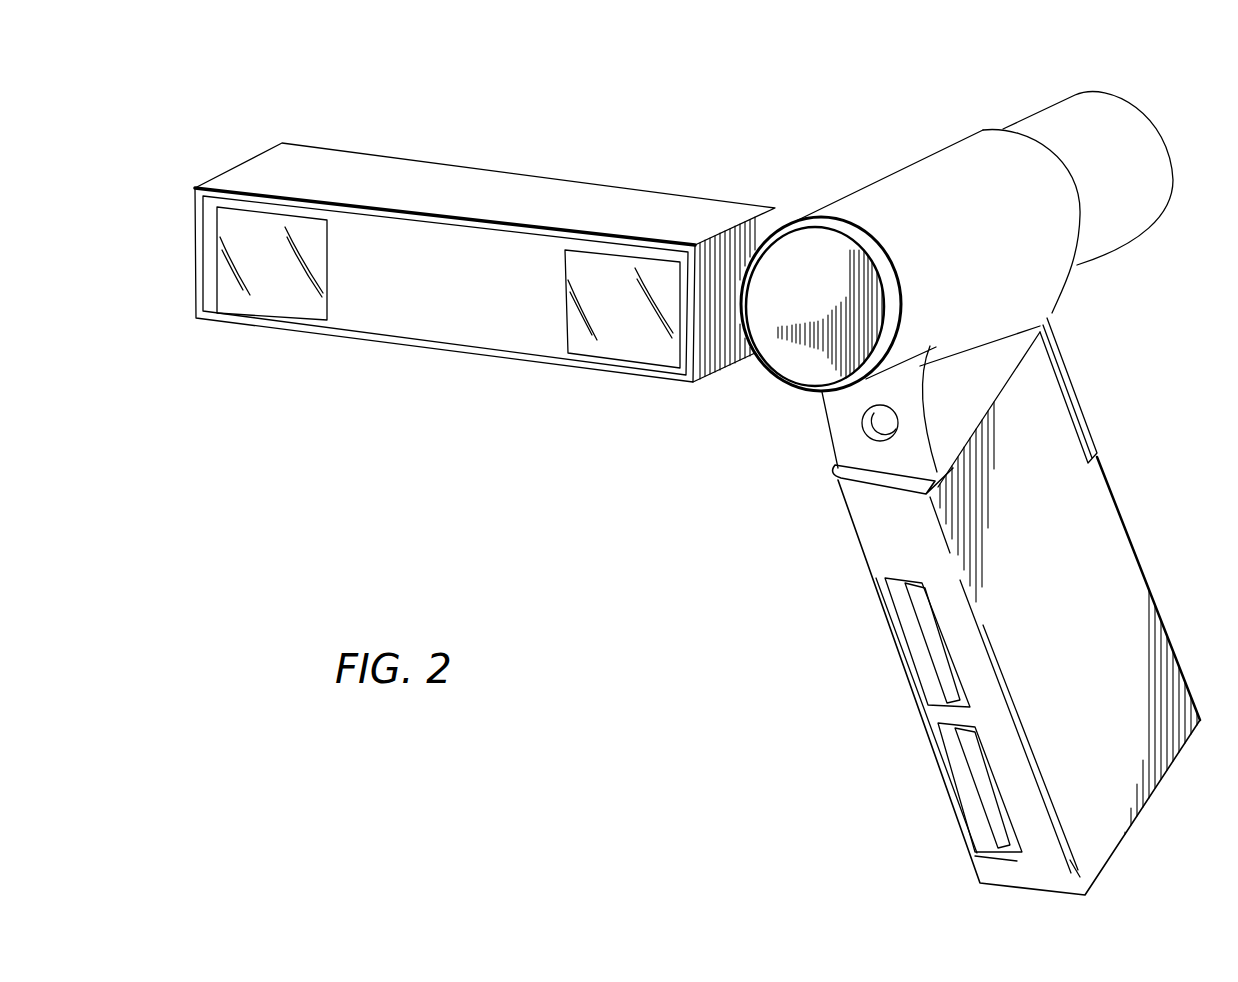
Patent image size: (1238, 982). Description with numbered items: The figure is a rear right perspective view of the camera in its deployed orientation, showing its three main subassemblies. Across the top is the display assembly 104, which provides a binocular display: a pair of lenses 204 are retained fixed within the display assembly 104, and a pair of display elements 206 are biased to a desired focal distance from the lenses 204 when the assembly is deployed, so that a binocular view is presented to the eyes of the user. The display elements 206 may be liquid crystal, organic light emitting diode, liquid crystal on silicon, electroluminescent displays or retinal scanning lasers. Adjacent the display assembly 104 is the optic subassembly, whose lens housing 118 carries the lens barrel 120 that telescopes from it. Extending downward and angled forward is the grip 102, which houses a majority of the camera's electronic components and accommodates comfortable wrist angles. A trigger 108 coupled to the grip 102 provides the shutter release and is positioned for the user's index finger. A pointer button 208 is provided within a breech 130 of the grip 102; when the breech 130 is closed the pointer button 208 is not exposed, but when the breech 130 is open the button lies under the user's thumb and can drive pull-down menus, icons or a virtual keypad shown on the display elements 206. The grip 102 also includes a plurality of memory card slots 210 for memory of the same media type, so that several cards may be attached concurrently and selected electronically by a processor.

The grip 102 is at (1093, 837).
The display assembly 104 is at (478, 178).
The trigger 108 is at (1068, 375).
The lens housing 118 is at (912, 160).
The lens barrel 120 is at (1040, 110).
The breech 130 is at (858, 455).
The lenses 204 is at (293, 302).
The display elements 206 is at (268, 268).
The pointer button 208 is at (867, 416).
The memory card slots 210 is at (915, 640).